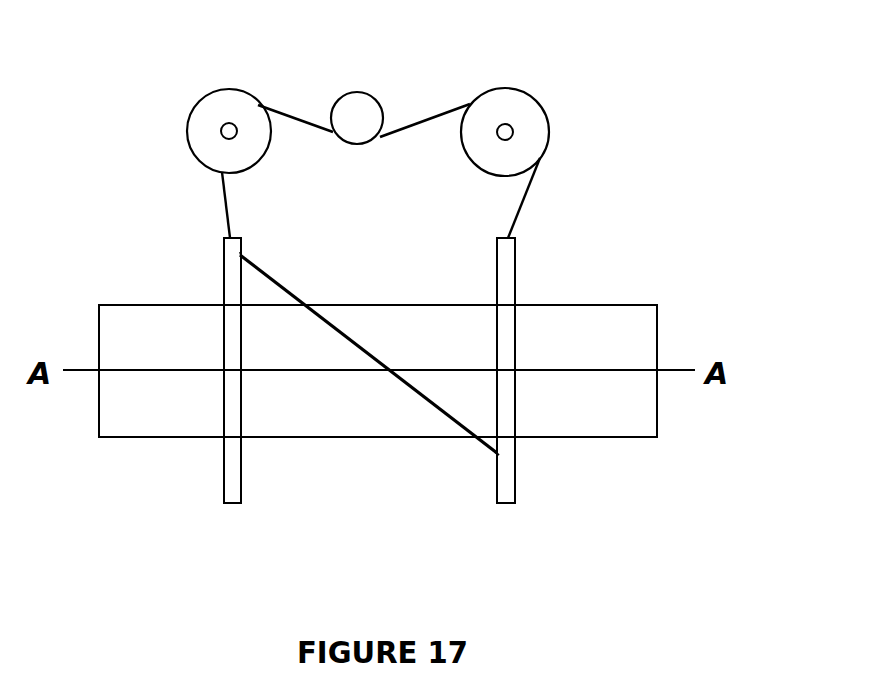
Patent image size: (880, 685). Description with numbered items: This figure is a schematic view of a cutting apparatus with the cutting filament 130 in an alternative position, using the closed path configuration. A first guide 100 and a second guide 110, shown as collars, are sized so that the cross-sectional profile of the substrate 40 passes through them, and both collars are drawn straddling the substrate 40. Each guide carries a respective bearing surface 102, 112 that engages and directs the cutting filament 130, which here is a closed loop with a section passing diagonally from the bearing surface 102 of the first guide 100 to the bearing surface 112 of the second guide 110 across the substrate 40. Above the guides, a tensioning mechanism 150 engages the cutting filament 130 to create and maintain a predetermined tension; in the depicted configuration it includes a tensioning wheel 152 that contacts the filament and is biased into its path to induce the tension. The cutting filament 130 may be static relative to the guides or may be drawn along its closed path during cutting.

The substrate 40 is at (638, 318).
The first guide 100 is at (232, 283).
The bearing surface 102 is at (242, 255).
The second guide 110 is at (507, 255).
The bearing surface 112 is at (500, 450).
The cutting filament 130 is at (282, 288).
The tensioning mechanism 150 is at (374, 100).
The tensioning wheel 152 is at (352, 103).